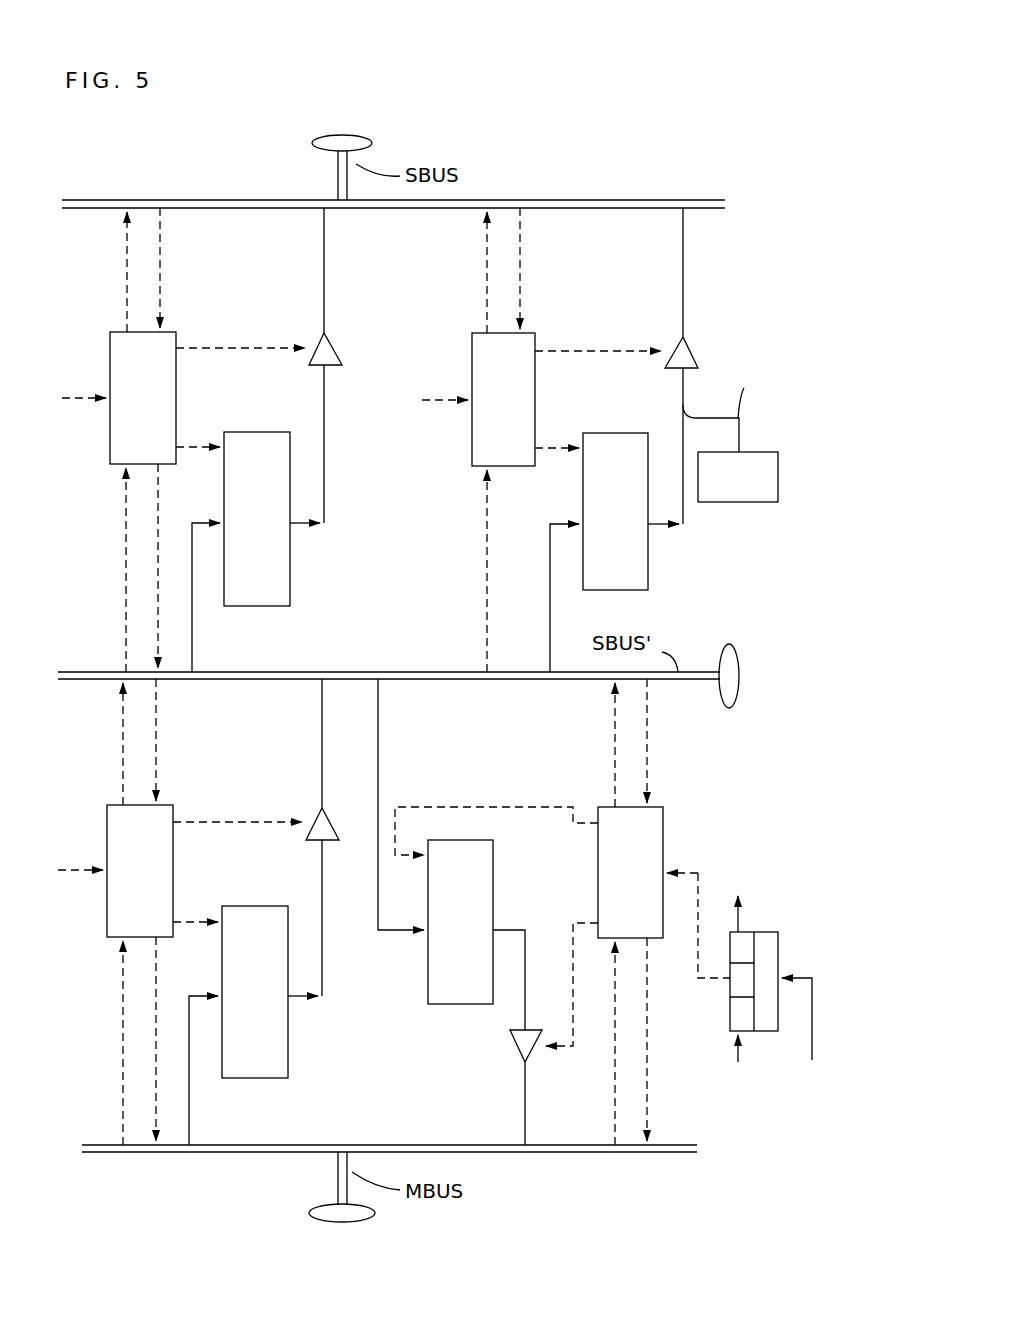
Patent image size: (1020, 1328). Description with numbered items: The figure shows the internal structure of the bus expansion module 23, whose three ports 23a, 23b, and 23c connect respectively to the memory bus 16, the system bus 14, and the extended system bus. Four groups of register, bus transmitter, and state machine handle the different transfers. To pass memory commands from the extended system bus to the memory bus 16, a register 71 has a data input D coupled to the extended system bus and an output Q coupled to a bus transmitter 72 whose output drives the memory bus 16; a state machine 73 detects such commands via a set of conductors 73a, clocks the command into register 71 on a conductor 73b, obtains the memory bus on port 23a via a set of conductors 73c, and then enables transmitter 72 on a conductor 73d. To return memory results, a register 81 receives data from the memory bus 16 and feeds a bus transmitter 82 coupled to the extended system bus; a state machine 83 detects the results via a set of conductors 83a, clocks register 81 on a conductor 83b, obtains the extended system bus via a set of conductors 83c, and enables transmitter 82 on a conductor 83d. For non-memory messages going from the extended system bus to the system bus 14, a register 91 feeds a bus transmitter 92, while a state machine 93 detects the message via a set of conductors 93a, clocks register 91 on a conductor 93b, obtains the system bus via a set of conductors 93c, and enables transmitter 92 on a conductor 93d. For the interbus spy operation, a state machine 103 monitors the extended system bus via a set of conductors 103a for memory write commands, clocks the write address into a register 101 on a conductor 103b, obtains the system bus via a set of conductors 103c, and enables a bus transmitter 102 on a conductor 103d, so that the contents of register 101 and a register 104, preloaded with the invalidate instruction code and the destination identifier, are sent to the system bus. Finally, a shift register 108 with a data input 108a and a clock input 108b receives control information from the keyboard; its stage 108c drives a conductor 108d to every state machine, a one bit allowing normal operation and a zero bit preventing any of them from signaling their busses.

The system bus 14 is at (338, 198).
The memory bus 16 is at (330, 1152).
The bus expansion module 23 is at (622, 150).
The port 23a is at (355, 1222).
The port 23b is at (362, 138).
The port 23c is at (738, 684).
The register 71 is at (428, 977).
The bus transmitter 72 is at (520, 1040).
The state machine 73 is at (663, 823).
The set of conductors 73a is at (615, 752).
The conductor 73b is at (458, 807).
The set of conductors 73c is at (615, 1085).
The conductor 73d is at (575, 943).
The register 81 is at (288, 1050).
The bus transmitter 82 is at (330, 815).
The state machine 83 is at (140, 871).
The set of conductors 83a is at (123, 1055).
The conductor 83b is at (190, 922).
The set of conductors 83c is at (123, 765).
The conductor 83d is at (228, 822).
The register 91 is at (290, 580).
The bus transmitter 92 is at (330, 342).
The state machine 93 is at (115, 427).
The set of conductors 93a is at (122, 586).
The conductor 93b is at (188, 447).
The set of conductors 93c is at (127, 258).
The conductor 93d is at (233, 348).
The register 101 is at (648, 566).
The bus transmitter 102 is at (690, 340).
The state machine 103 is at (472, 436).
The set of conductors 103a is at (487, 587).
The conductor 103b is at (552, 448).
The set of conductors 103c is at (487, 258).
The conductor 103d is at (572, 351).
The register 104 is at (748, 502).
The shift register 108 is at (772, 910).
The data input 108a is at (738, 1053).
The clock input 108b is at (812, 1050).
The stage 108c is at (738, 987).
The conductor 108d is at (75, 398).